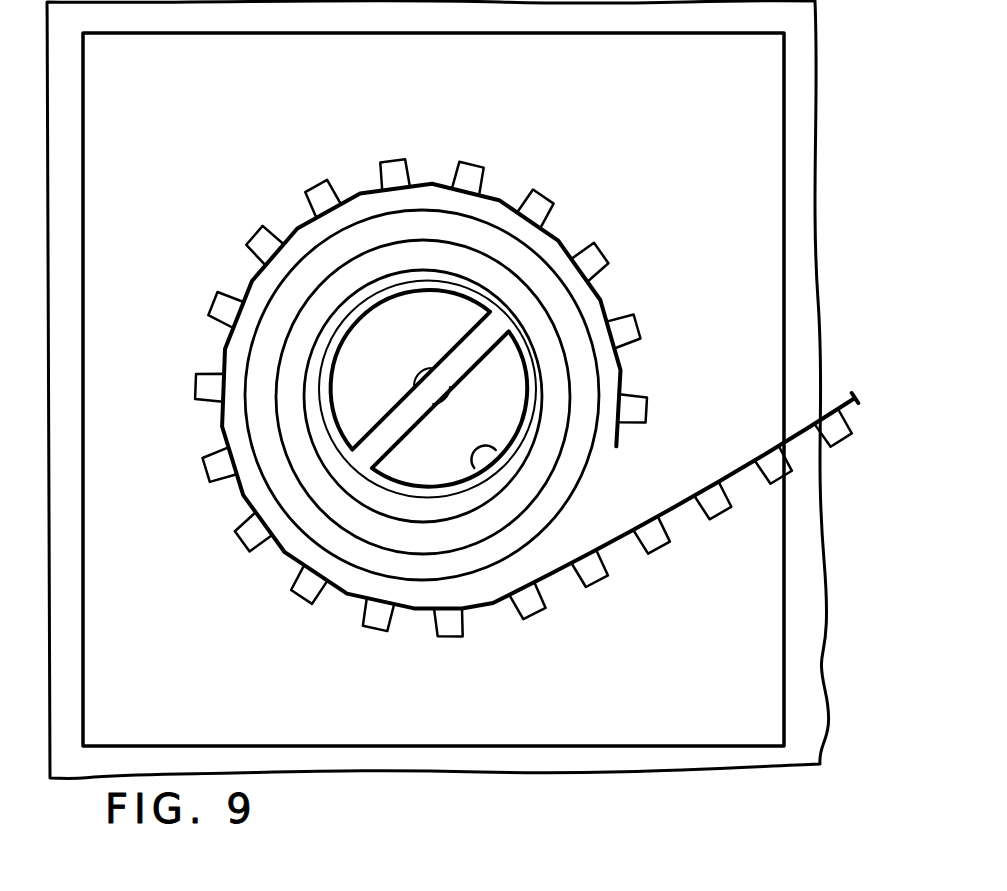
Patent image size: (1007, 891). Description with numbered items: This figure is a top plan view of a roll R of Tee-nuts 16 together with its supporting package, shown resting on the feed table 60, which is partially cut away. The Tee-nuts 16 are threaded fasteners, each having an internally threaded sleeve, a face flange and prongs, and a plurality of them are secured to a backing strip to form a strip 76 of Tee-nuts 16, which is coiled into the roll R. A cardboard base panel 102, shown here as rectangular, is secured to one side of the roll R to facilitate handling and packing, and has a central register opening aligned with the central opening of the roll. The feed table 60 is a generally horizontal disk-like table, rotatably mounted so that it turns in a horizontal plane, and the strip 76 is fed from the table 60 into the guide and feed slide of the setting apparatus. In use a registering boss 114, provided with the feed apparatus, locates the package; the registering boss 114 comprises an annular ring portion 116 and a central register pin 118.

The Tee-nut 16 is at (466, 142).
The feed table 60 is at (508, 777).
The strip of Tee-nuts 76 is at (735, 462).
The base panel 102 is at (621, 708).
The registering boss 114 is at (438, 320).
The annular ring portion 116 is at (482, 447).
The central register pin 118 is at (452, 402).
The roll R is at (212, 209).